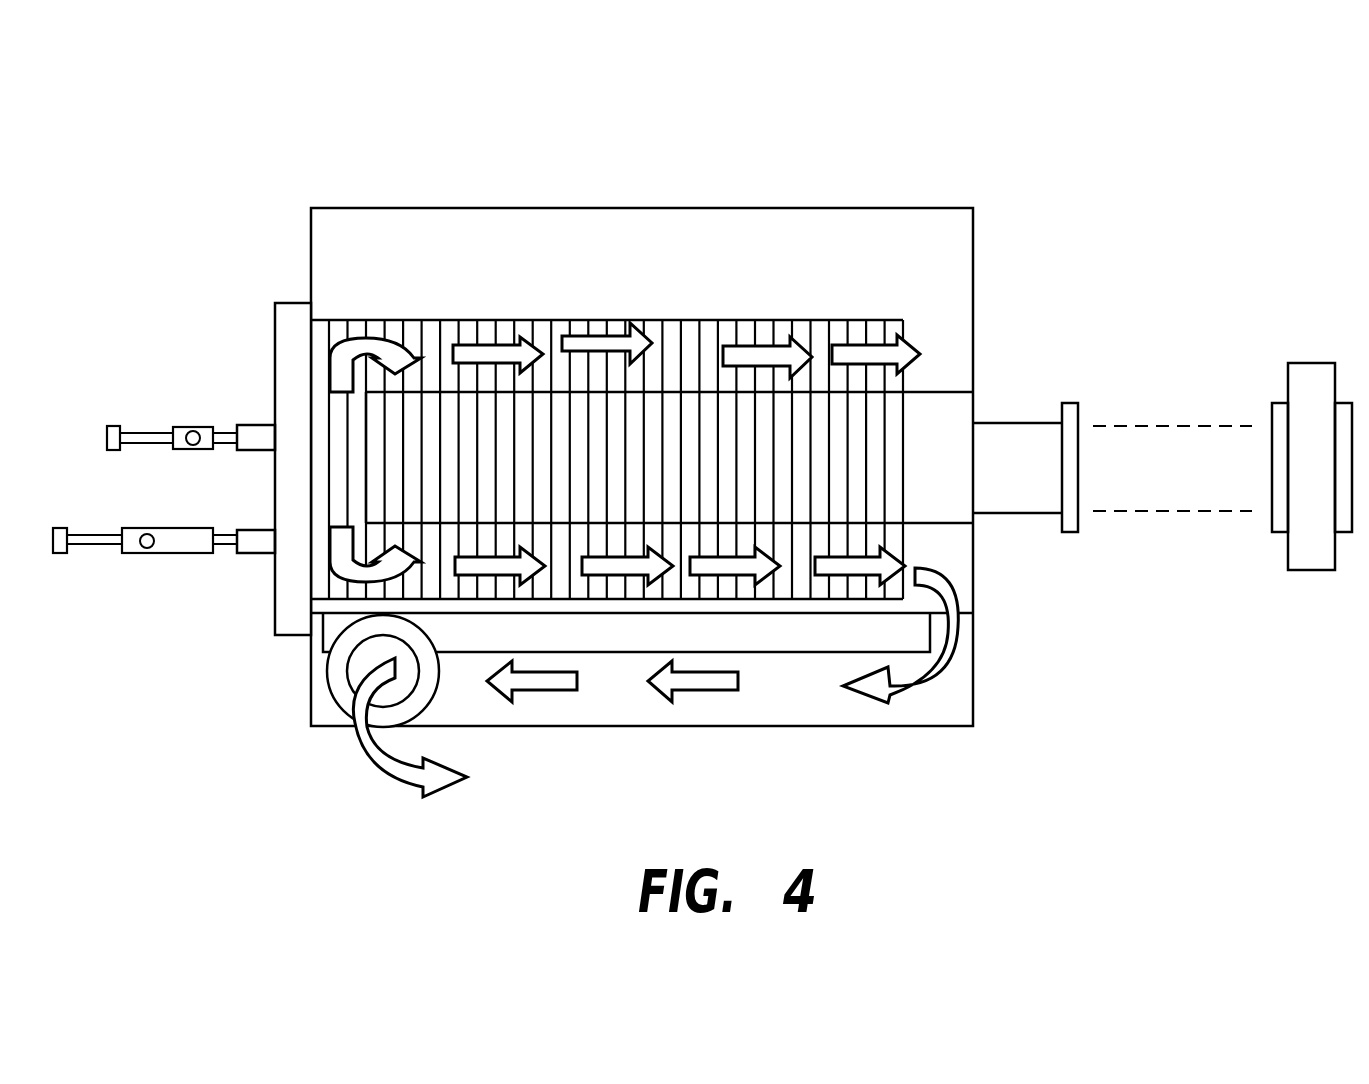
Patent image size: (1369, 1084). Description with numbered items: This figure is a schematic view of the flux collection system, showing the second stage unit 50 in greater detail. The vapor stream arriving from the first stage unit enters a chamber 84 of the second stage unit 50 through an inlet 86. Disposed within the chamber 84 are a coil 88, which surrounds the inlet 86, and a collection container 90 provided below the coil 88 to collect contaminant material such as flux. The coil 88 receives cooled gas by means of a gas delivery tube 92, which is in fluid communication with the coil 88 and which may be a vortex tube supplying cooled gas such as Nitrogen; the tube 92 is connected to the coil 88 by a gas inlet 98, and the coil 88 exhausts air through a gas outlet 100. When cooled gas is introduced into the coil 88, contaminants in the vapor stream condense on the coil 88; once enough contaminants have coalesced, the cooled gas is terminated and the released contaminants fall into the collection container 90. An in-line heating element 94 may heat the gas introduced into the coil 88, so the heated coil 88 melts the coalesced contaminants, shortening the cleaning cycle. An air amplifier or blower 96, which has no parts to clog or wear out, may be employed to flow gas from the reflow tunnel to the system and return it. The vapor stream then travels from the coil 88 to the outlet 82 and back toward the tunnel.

The second stage unit 50 is at (453, 169).
The outlet 82 is at (333, 697).
The chamber 84 is at (899, 198).
The inlet 86 is at (1077, 403).
The coil 88 is at (687, 320).
The collection container 90 is at (798, 652).
The gas delivery tube 92 is at (187, 425).
The in-line heating element 94 is at (178, 528).
The air amplifier or blower 96 is at (1290, 570).
The gas inlet 98 is at (257, 425).
The gas outlet 100 is at (267, 553).